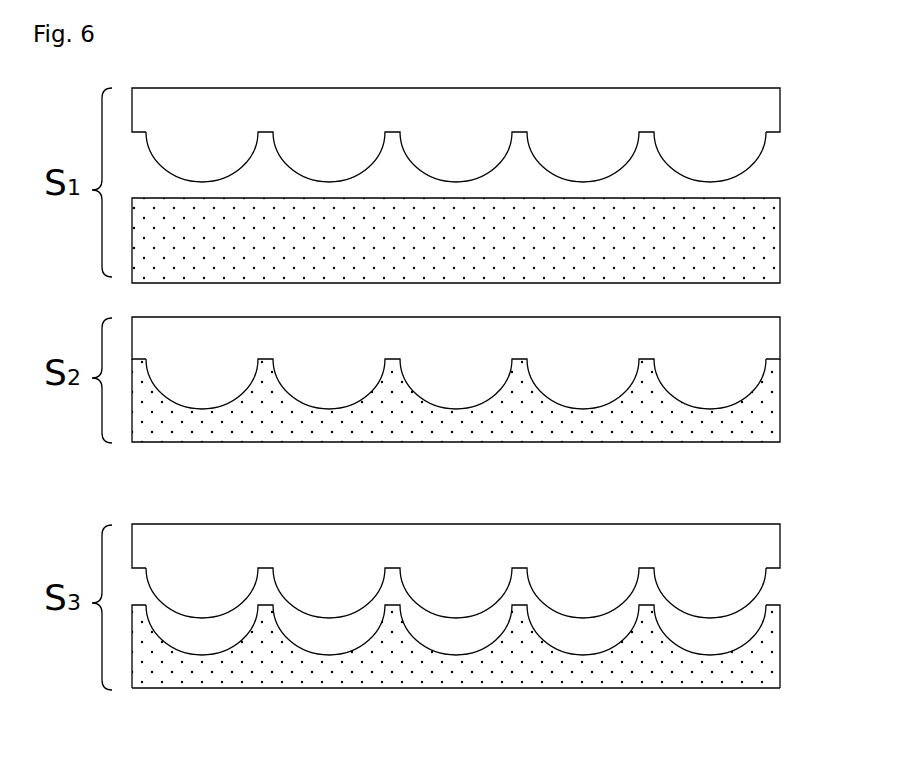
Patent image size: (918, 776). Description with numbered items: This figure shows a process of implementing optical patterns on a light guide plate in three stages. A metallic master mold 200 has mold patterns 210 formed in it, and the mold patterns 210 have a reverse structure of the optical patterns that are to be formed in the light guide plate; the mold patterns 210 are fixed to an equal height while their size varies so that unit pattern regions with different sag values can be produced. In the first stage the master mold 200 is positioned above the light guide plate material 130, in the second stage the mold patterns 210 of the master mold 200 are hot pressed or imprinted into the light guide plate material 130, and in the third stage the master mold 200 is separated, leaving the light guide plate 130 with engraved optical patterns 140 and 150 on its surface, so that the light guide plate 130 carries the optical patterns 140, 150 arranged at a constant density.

The master mold 200 is at (780, 108).
The mold patterns 210 is at (760, 153).
The light guide plate 130 is at (780, 245).
The optical patterns 140 is at (745, 636).
The optical patterns 150 is at (583, 656).